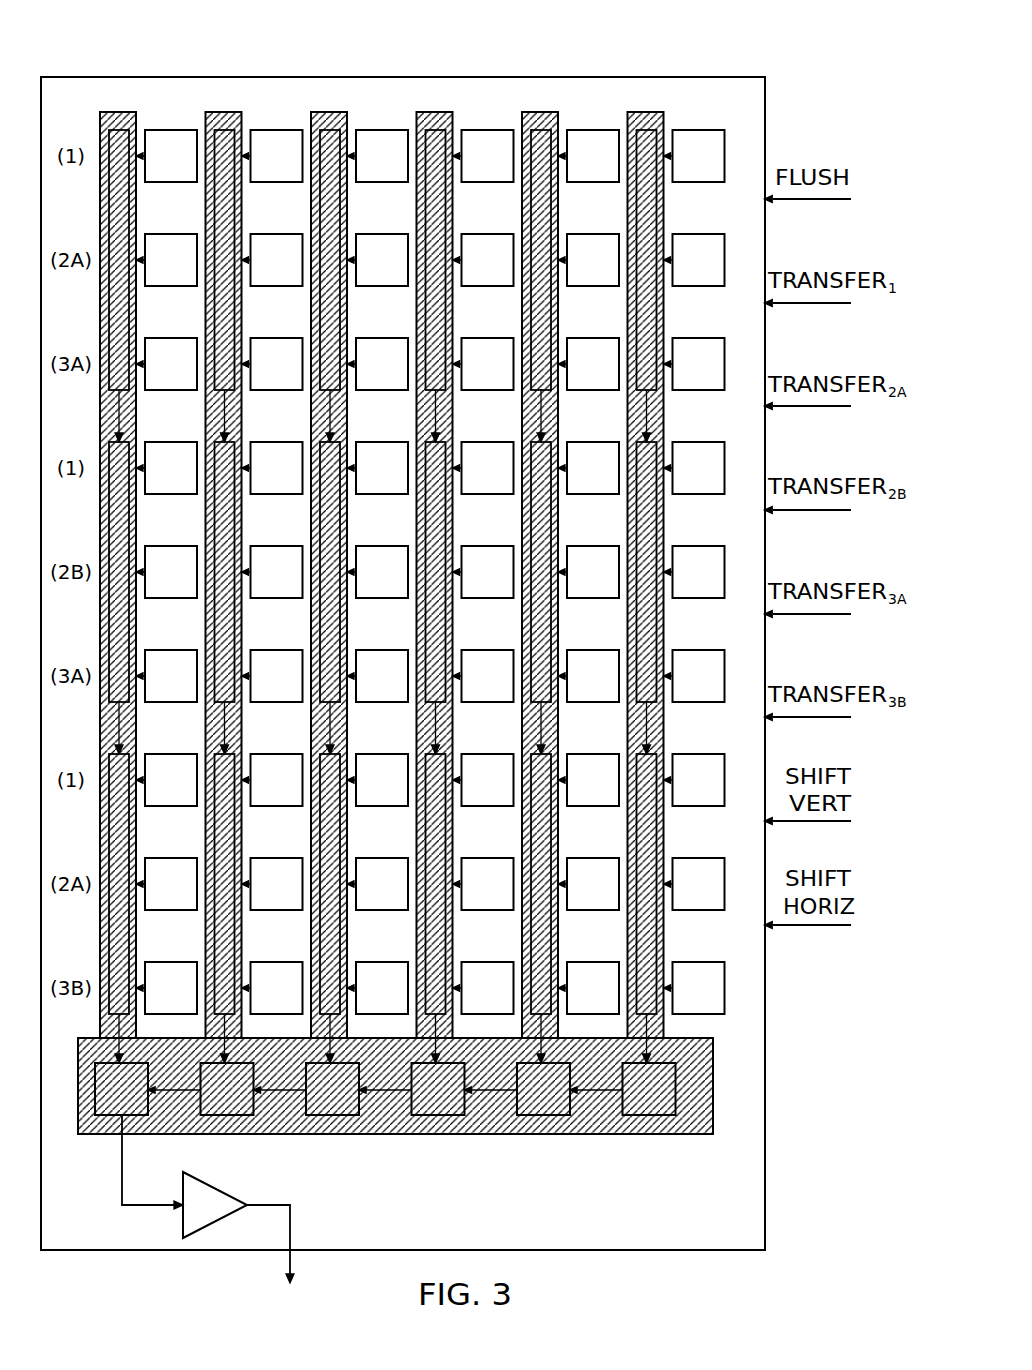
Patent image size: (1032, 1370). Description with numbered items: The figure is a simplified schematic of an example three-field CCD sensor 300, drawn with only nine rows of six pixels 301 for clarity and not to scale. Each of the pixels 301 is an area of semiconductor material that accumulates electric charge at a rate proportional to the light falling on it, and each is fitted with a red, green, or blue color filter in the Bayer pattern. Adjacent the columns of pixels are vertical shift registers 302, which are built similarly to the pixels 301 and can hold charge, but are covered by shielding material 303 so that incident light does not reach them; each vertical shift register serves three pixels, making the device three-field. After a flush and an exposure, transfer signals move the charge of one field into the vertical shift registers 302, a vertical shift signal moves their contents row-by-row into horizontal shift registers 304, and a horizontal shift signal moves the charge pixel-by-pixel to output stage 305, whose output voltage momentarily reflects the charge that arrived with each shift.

The three-field CCD sensor 300 is at (118, 28).
The pixels 301 is at (677, 243).
The vertical shift registers 302 is at (140, 335).
The shielding material 303 is at (703, 1108).
The horizontal shift registers 304 is at (233, 1092).
The output stage 305 is at (197, 1174).